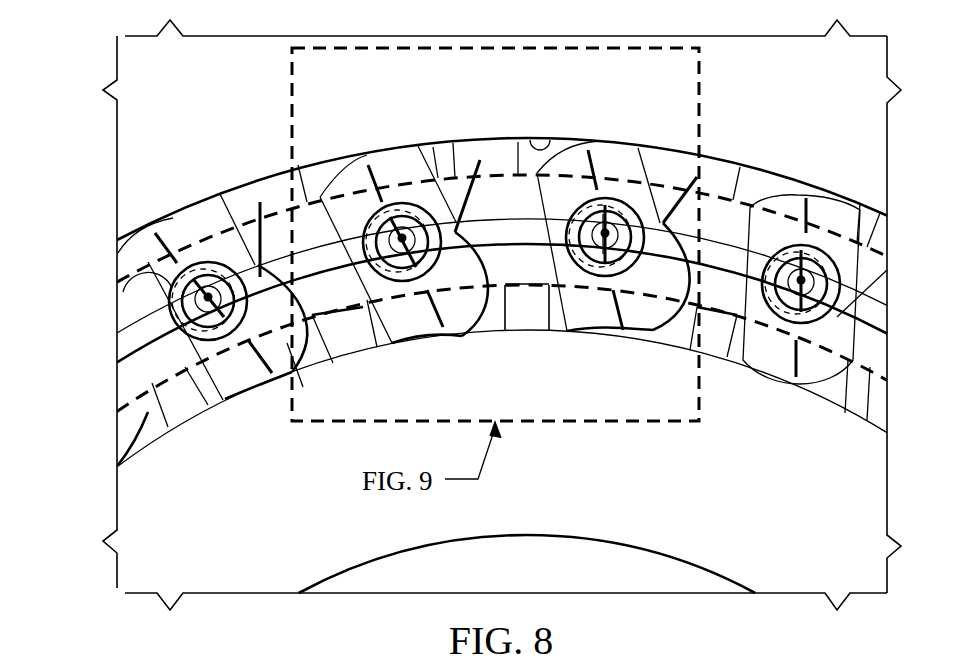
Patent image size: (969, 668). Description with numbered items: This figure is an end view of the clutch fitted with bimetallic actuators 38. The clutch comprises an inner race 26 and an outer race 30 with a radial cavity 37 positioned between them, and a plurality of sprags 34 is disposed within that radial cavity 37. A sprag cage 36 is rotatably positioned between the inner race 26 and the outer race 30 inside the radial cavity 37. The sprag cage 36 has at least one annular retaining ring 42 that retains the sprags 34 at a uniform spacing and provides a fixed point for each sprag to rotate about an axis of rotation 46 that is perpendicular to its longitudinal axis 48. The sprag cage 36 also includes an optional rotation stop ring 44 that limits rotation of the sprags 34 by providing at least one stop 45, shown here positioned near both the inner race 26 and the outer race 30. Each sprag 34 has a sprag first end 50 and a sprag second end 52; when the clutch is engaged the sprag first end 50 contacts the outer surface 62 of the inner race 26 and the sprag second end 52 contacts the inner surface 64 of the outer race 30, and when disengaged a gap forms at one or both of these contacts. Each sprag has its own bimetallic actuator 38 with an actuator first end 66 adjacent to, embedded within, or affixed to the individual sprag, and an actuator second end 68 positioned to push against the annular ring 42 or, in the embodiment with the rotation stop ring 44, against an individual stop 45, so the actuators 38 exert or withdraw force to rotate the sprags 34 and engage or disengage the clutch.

The inner race 26 is at (166, 558).
The outer race 30 is at (809, 103).
The sprags 34 is at (337, 185).
The sprag cage 36 is at (126, 356).
The radial cavity 37 is at (278, 226).
The actuators 38 is at (168, 290).
The annular retaining ring 42 is at (128, 353).
The rotation stop ring 44 is at (150, 262).
The stop 45 is at (725, 172).
The axis of rotation 46 is at (592, 238).
The longitudinal axis 48 is at (824, 202).
The sprag first end 50 is at (658, 332).
The sprag second end 52 is at (640, 152).
The outer surface 62 is at (832, 400).
The inner surface 64 is at (540, 148).
The actuator first end 66 is at (603, 228).
The actuator second end 68 is at (473, 160).